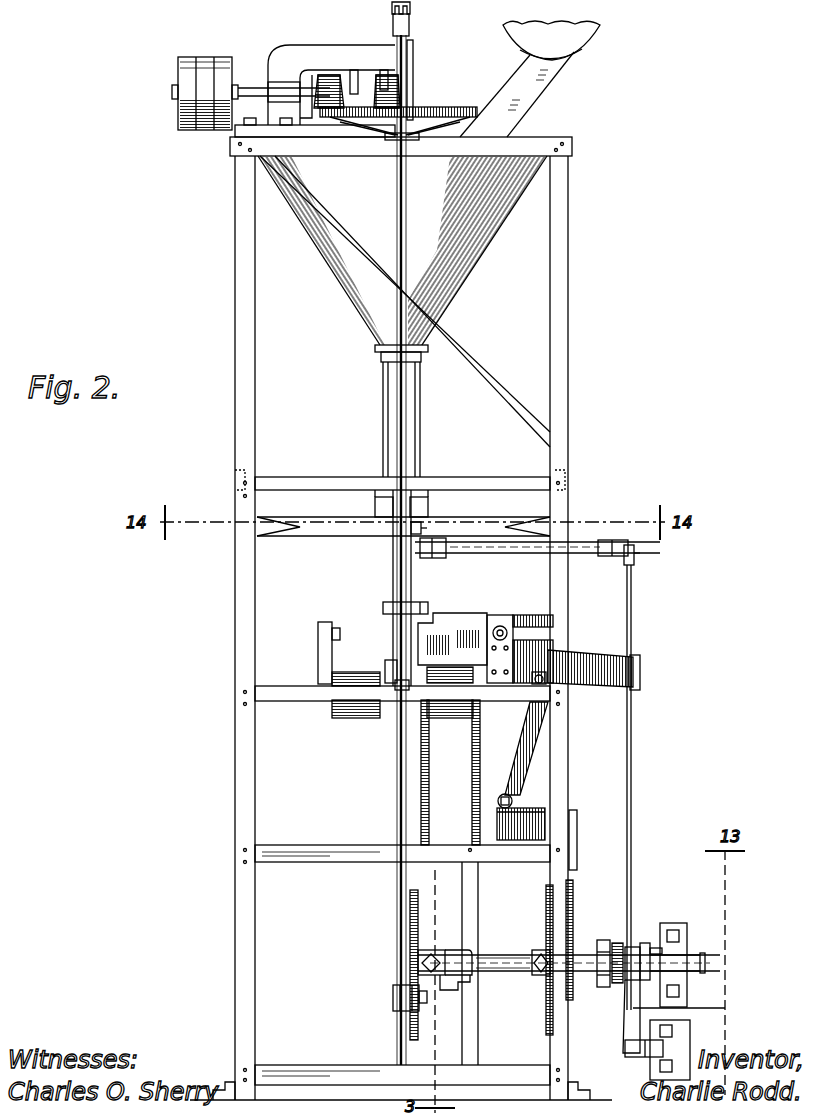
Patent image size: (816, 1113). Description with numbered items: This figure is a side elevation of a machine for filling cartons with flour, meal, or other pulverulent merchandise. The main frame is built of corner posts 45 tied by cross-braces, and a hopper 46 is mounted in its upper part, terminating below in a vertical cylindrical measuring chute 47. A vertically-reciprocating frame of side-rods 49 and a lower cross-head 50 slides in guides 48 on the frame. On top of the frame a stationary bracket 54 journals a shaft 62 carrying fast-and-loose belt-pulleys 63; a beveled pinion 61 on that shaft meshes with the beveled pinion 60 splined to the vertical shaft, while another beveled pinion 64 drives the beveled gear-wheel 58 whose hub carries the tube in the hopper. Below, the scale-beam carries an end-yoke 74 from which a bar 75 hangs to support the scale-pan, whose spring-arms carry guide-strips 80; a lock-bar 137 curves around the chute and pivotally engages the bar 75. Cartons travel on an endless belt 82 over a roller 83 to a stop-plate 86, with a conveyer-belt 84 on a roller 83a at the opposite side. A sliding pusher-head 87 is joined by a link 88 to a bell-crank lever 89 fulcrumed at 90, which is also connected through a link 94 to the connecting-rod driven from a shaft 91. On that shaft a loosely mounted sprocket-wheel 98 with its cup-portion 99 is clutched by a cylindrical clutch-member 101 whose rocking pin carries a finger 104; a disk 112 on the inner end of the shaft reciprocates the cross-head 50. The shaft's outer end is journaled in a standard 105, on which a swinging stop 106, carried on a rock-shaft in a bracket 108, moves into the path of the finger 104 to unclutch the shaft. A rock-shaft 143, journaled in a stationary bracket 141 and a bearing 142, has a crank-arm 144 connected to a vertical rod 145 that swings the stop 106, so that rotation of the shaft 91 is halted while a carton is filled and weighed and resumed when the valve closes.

The corner posts 45 is at (256, 386).
The hopper 46 is at (468, 278).
The cylindrical measuring-receptacle or chute 47 is at (421, 408).
The guides 48 is at (396, 140).
The side-rods 49 is at (398, 322).
The lower cross-head 50 is at (393, 997).
The stationary bracket 54 is at (282, 58).
The beveled gear-wheel 58 is at (465, 112).
The beveled pinion 60 is at (410, 104).
The beveled pinion 61 is at (388, 86).
The shaft 62 is at (246, 87).
The fast-and-loose belt-pulleys 63 is at (210, 134).
The beveled pinion 64 is at (332, 76).
The end-yoke 74 is at (375, 505).
The rod or bar 75 is at (393, 568).
The guide-strips 80 is at (383, 609).
The endless traveling belt 82 is at (452, 720).
The roller 83 is at (472, 740).
The roller 83a is at (330, 703).
The endless traveling conveyer-belt 84 is at (340, 718).
The stop-plate 86 is at (448, 618).
The sliding pusher-head 87 is at (573, 652).
The link 88 is at (546, 684).
The bell-crank lever 89 is at (535, 756).
The fulcrum 90 is at (512, 802).
The shaft 91 is at (502, 954).
The link 94 is at (578, 828).
The sprocket-wheel 98 is at (600, 988).
The cup-portion 99 is at (617, 942).
The cylindrical clutch-member 101 is at (628, 948).
The finger 104 is at (644, 943).
The standard 105 is at (688, 1003).
The swinging-finger or stop 106 is at (725, 1009).
The bracket 108 is at (632, 1058).
The wheel or disk 112 is at (418, 912).
The lock-bar 137 is at (422, 527).
The stationary bracket 141 is at (422, 558).
The bearing 142 is at (588, 540).
The rock-shaft 143 is at (470, 540).
The crank-arm 144 is at (636, 558).
The vertically-extending rod 145 is at (633, 757).